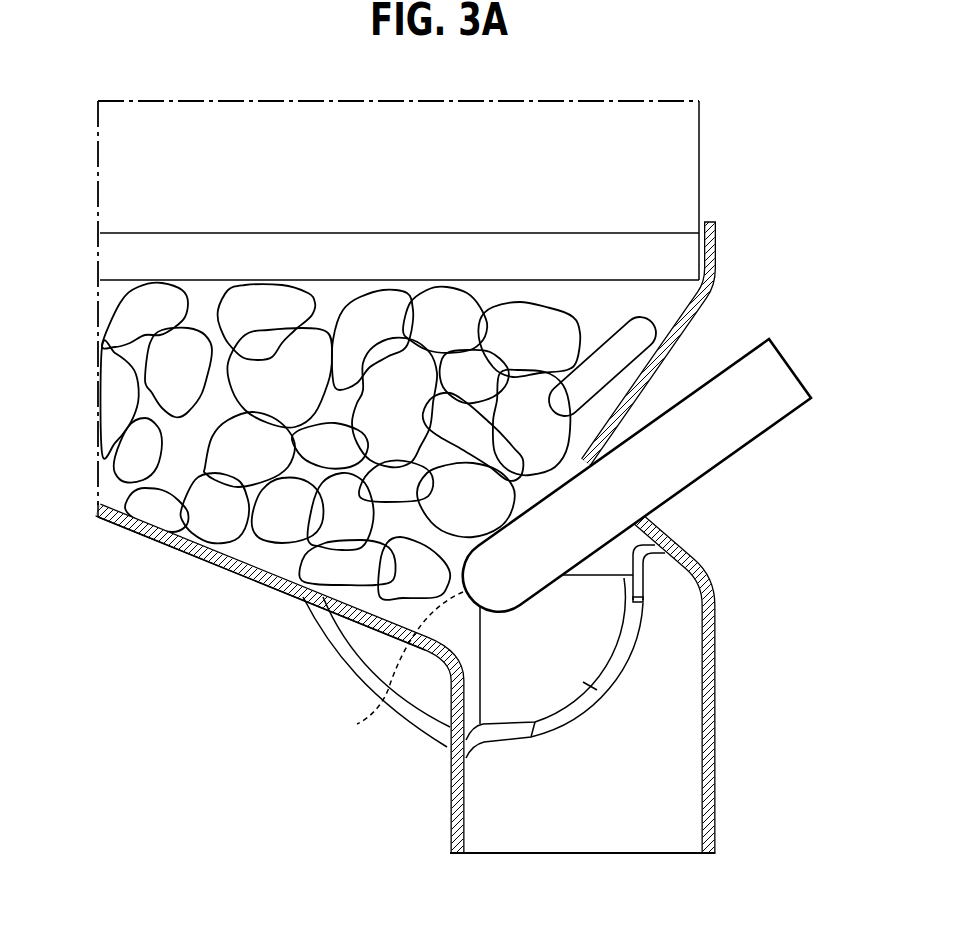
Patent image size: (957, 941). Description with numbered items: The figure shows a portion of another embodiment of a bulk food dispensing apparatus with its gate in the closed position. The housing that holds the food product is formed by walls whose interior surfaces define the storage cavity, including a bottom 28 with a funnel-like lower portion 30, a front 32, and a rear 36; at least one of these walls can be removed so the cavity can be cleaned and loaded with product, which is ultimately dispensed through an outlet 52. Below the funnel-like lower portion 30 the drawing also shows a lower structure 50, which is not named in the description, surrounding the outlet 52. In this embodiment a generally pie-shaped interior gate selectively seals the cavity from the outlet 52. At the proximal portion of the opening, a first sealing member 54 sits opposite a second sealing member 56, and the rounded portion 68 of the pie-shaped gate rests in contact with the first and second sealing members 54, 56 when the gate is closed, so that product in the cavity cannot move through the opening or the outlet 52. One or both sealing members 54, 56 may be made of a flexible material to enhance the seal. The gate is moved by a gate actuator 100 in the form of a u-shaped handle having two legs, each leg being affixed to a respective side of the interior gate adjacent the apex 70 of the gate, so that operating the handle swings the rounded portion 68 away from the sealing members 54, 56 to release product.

The bottom 28 is at (170, 547).
The funnel-like lower portion 30 is at (265, 556).
The front 32 is at (715, 243).
The rear 36 is at (97, 268).
The housing wall 50 is at (717, 853).
The outlet 52 is at (602, 838).
The first sealing member 54 is at (490, 745).
The second sealing member 56 is at (645, 579).
The rounded portion 68 is at (597, 690).
The apex 70 is at (391, 666).
The gate actuator 100 is at (805, 337).